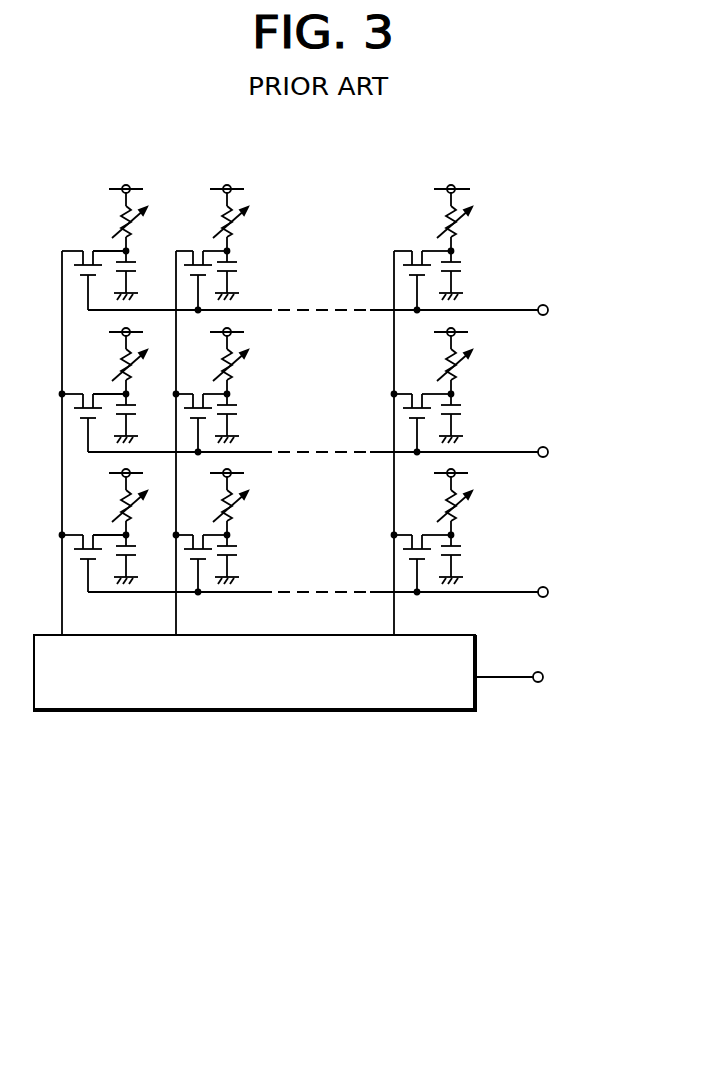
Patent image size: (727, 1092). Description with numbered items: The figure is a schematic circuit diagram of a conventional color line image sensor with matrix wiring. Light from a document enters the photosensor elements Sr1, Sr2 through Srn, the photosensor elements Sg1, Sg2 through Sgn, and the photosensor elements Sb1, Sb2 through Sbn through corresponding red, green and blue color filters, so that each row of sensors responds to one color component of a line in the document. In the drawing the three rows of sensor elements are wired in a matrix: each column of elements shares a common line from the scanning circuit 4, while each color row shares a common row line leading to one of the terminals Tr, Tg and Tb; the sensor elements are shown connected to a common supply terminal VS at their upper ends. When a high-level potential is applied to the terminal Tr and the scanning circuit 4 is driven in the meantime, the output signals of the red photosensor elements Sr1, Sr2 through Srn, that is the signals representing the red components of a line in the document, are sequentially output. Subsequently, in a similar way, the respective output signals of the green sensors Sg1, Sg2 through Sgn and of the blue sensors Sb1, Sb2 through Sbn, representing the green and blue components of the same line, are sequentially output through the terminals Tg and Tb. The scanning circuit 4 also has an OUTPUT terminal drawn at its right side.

The scanning circuit 4 is at (380, 712).
The photosensor element Sr1 is at (135, 242).
The photosensor element Sr2 is at (236, 242).
The photosensor element Srn is at (461, 242).
The photosensor element Sg1 is at (136, 385).
The photosensor element Sg2 is at (237, 385).
The photosensor element Sgn is at (462, 385).
The photosensor element Sb1 is at (136, 526).
The photosensor element Sb2 is at (237, 526).
The photosensor element Sbn is at (461, 526).
The terminal Tr is at (554, 311).
The terminal Tg is at (557, 453).
The terminal Tb is at (557, 593).
The supply voltage terminal VS is at (483, 189).
The scanning circuit output terminal OUTPUT is at (551, 679).